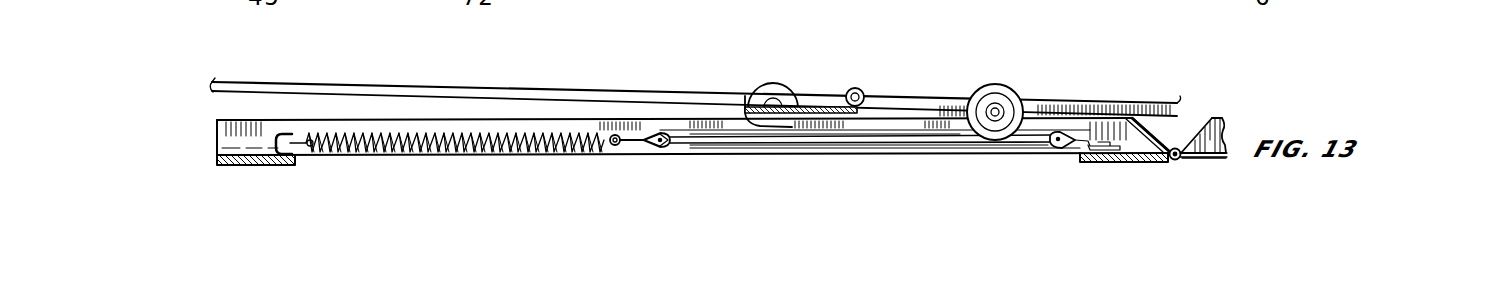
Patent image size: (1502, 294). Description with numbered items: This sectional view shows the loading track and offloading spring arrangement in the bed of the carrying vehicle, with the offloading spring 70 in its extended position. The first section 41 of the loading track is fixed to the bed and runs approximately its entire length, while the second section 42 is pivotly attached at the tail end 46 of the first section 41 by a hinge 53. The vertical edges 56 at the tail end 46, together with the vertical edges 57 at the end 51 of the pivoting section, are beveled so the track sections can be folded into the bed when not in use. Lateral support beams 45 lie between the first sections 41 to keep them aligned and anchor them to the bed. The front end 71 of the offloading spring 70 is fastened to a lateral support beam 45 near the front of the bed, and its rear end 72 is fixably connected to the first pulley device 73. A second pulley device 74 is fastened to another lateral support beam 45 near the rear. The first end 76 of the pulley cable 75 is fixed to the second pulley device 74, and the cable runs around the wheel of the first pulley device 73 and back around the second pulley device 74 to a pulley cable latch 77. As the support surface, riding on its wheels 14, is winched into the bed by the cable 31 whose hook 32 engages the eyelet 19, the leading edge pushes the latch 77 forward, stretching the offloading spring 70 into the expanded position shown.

The wheels 14 is at (778, 83).
The eyelet 19 is at (864, 92).
The cable 31 is at (440, 88).
The hook 32 is at (833, 100).
The first section 41 is at (522, 122).
The second section 42 is at (1222, 117).
The lateral support beams 45 is at (255, 168).
The tail end 46 is at (1150, 128).
The end 51 is at (1197, 143).
The hinge 53 is at (1174, 161).
The vertical edges 56 is at (1127, 164).
The vertical edges 57 is at (1213, 158).
The offloading spring 70 is at (415, 158).
The front end 71 is at (309, 158).
The rear end 72 is at (605, 158).
The first pulley device 73 is at (657, 130).
The second pulley device 74 is at (1067, 133).
The pulley cable 75 is at (693, 158).
The first end 76 is at (1040, 142).
The pulley cable latch 77 is at (745, 96).